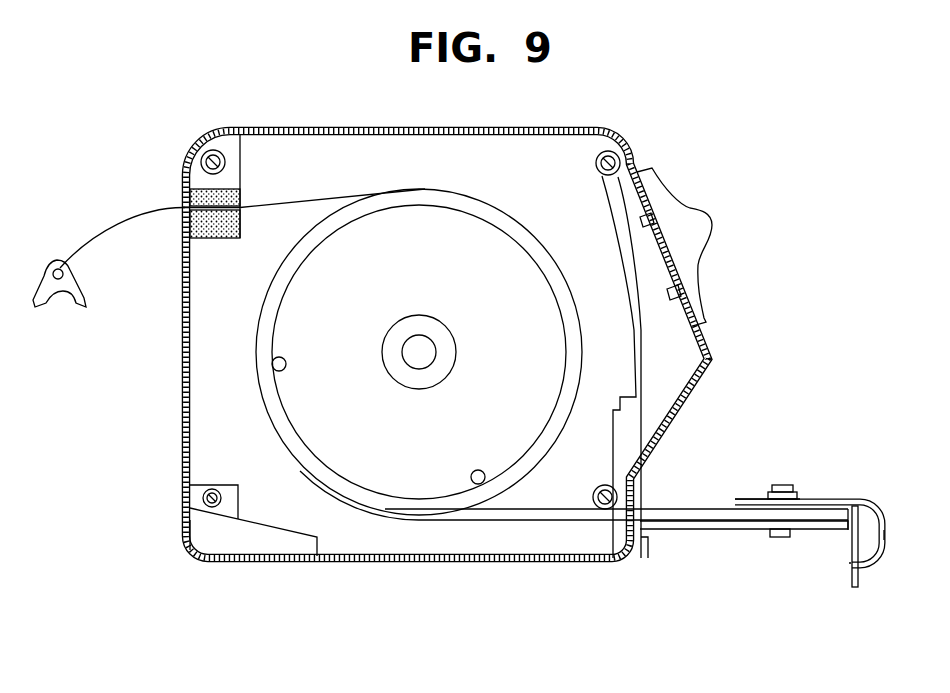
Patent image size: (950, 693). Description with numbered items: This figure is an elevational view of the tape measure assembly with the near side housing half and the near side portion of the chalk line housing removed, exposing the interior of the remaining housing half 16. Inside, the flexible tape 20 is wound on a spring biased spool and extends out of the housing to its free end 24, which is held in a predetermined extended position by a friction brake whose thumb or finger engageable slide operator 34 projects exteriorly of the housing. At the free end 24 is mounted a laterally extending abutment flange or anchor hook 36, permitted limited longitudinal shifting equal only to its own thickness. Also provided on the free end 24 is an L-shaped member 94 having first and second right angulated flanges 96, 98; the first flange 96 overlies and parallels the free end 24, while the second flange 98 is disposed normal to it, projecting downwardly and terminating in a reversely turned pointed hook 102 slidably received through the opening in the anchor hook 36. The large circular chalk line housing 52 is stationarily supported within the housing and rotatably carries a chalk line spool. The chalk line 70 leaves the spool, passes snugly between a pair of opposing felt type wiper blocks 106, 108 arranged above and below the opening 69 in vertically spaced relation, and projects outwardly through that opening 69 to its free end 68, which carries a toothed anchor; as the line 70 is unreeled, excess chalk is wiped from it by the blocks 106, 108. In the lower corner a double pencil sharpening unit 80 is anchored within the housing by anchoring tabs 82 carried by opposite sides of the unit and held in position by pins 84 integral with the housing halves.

The housing half 16 is at (383, 536).
The flexible tape 20 is at (518, 521).
The free end 24 is at (830, 530).
The slide operator 34 is at (677, 212).
The anchor hook 36 is at (855, 588).
The chalk line housing 52 is at (487, 207).
The free end of chalk line 68 is at (121, 210).
The opening 69 is at (183, 210).
The chalk line 70 is at (295, 202).
The double pencil sharpening unit 80 is at (208, 537).
The bracket 82 is at (226, 486).
The pins 84 is at (202, 498).
The L-shaped member 94 is at (890, 510).
The first flange 96 is at (855, 498).
The second flange 98 is at (888, 542).
The reversely turned pointed hook 102 is at (847, 567).
The wiper block 106 is at (241, 192).
The wiper block 108 is at (213, 239).